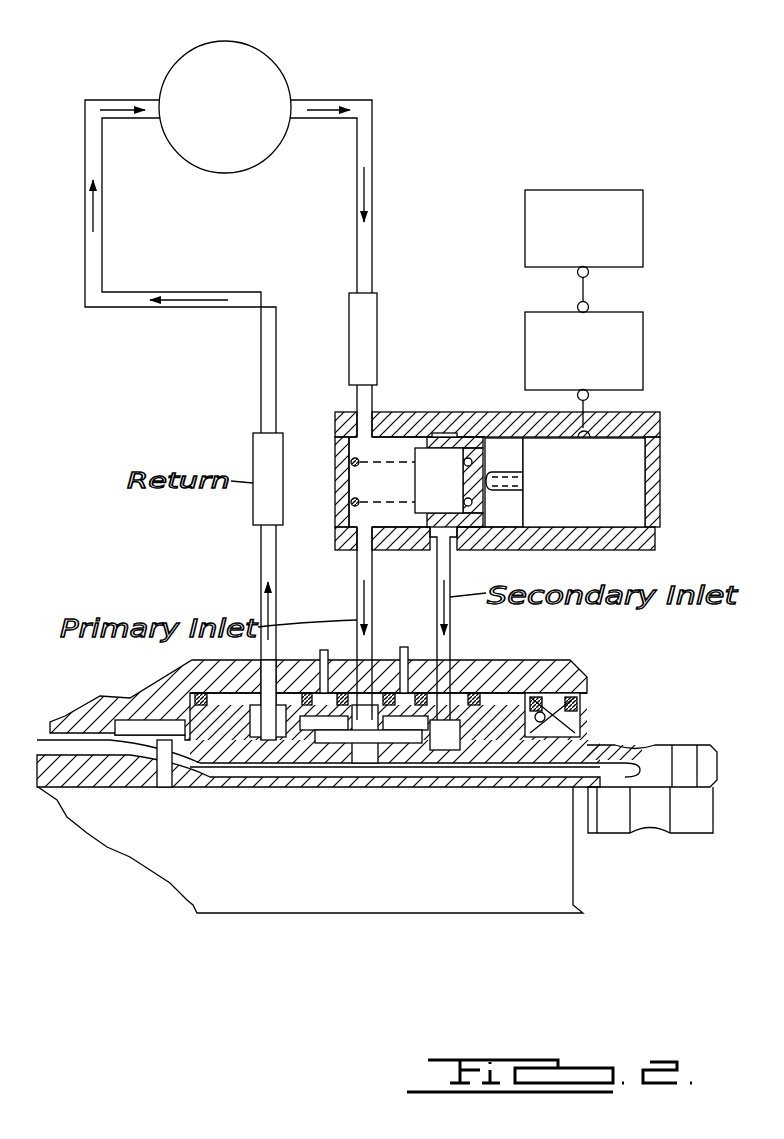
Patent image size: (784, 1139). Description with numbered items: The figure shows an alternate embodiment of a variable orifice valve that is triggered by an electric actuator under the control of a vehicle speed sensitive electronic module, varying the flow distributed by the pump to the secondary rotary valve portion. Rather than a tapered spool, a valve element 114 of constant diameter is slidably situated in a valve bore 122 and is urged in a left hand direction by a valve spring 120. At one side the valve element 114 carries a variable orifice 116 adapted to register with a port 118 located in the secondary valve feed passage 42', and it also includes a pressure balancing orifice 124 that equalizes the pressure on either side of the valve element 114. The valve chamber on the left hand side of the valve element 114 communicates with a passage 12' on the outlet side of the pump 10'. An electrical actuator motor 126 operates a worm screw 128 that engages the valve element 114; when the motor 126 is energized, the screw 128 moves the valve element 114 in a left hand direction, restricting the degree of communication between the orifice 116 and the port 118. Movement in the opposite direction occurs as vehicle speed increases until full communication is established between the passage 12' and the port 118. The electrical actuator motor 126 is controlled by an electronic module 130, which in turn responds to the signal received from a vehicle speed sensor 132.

The pump 10' is at (225, 86).
The passage 12' is at (350, 247).
The vehicle speed sensor 132 is at (626, 190).
The electronic module 130 is at (640, 326).
The electrical actuator motor 126 is at (637, 448).
The valve bore 122 is at (496, 440).
The valve spring 120 is at (352, 470).
The valve element 114 is at (450, 437).
The pressure balancing orifice 124 is at (478, 470).
The worm screw 128 is at (510, 492).
The variable orifice 116 is at (430, 534).
The port 118 is at (418, 581).
The secondary valve feed passage 42' is at (490, 666).